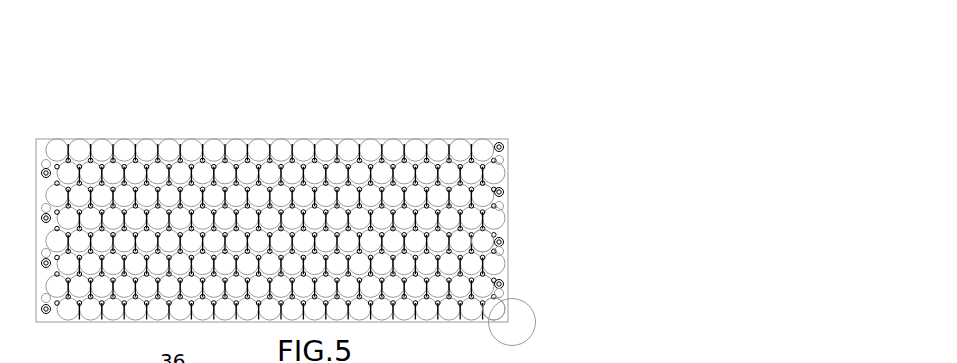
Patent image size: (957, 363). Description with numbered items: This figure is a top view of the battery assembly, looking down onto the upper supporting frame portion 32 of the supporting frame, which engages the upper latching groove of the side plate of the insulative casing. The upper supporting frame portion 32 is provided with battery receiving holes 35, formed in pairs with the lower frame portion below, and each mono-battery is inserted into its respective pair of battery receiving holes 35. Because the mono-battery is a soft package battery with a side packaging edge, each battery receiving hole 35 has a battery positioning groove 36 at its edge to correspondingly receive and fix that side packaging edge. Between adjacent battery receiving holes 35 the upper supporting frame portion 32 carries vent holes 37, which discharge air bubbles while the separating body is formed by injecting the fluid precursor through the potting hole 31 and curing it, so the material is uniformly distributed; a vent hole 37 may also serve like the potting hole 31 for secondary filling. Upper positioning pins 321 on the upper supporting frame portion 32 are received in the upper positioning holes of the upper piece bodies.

The upper supporting frame portion 32 is at (450, 140).
The upper positioning pin 321 is at (508, 140).
The vent hole 37 is at (495, 232).
The potting hole 31 is at (498, 305).
The battery receiving hole 35 is at (502, 292).
The battery positioning groove 36 is at (490, 301).